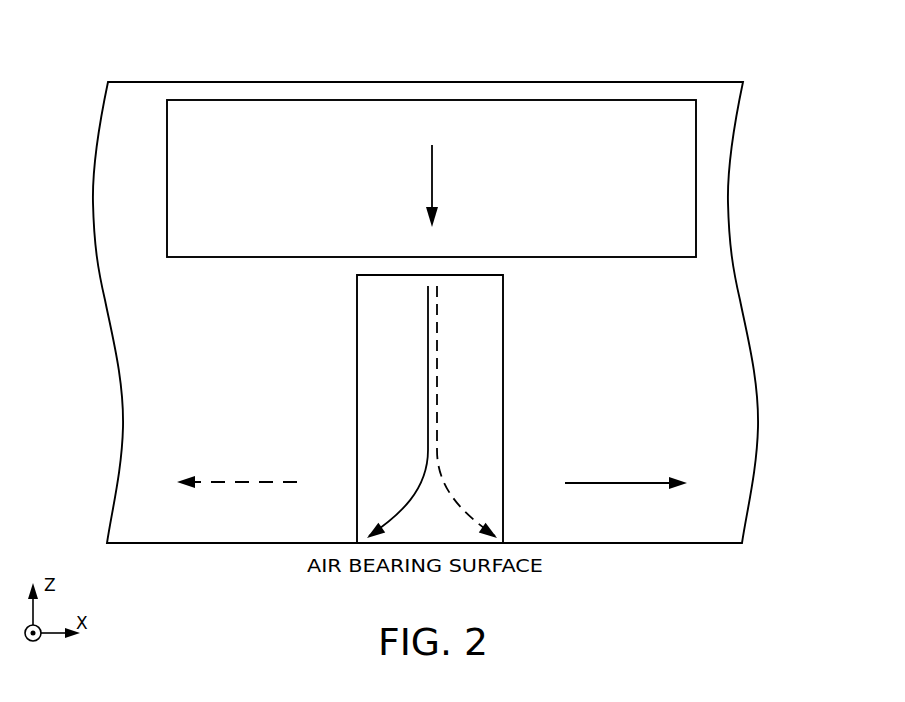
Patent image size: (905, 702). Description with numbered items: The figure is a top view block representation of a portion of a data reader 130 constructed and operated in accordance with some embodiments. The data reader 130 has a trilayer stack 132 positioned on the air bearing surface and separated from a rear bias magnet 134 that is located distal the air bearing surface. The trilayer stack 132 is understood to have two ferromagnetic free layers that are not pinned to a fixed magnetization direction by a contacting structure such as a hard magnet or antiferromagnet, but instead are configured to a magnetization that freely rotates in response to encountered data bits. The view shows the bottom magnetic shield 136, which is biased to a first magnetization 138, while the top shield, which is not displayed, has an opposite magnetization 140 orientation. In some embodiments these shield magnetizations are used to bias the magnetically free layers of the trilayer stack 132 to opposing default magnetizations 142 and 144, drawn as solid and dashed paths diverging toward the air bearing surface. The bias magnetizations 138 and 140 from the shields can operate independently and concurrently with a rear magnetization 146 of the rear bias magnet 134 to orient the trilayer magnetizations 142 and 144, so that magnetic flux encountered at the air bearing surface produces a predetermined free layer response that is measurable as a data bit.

The data reader 130 is at (143, 47).
The trilayer stack 132 is at (397, 300).
The rear bias magnet 134 is at (206, 126).
The bottom magnetic shield 136 is at (152, 536).
The first magnetization 138 is at (620, 485).
The opposite magnetization 140 is at (240, 484).
The default magnetization 142 is at (427, 417).
The default magnetization 144 is at (435, 395).
The rear magnetization 146 is at (429, 175).